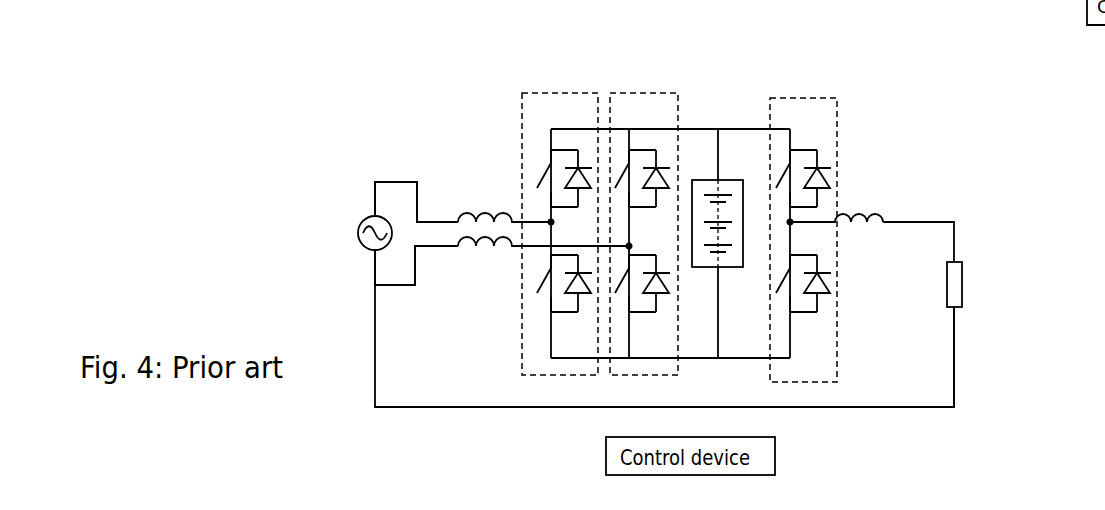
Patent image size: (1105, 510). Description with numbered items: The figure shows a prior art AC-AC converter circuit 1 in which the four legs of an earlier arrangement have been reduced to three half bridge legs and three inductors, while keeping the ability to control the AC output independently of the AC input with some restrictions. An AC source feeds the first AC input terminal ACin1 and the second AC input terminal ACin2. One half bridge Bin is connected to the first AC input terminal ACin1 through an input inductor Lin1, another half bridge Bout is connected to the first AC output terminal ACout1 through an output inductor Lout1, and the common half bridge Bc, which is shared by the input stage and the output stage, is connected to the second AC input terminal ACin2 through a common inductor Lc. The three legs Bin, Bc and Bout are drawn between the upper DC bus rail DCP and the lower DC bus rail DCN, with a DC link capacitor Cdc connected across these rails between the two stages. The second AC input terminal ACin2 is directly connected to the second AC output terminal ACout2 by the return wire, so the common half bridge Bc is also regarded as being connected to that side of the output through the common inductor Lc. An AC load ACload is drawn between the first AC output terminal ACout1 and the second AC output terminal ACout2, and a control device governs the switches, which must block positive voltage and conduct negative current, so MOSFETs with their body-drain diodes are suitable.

The prior art power converter system 1 is at (437, 105).
The first AC input terminal ACin1 is at (411, 180).
The second AC input terminal ACin2 is at (416, 285).
The input inductor Lin1 is at (506, 200).
The common inductor Lc is at (545, 258).
The half bridge Bin is at (553, 92).
The common half bridge leg Bc is at (653, 92).
The half bridge Bout is at (822, 98).
The positive DC bus rail DCP is at (670, 114).
The negative DC bus rail DCN is at (670, 372).
The DC link capacitor Cdc is at (724, 243).
The output inductor Lout1 is at (840, 198).
The first AC output terminal ACout1 is at (958, 236).
The AC load ACload is at (996, 281).
The second AC output terminal ACout2 is at (993, 357).